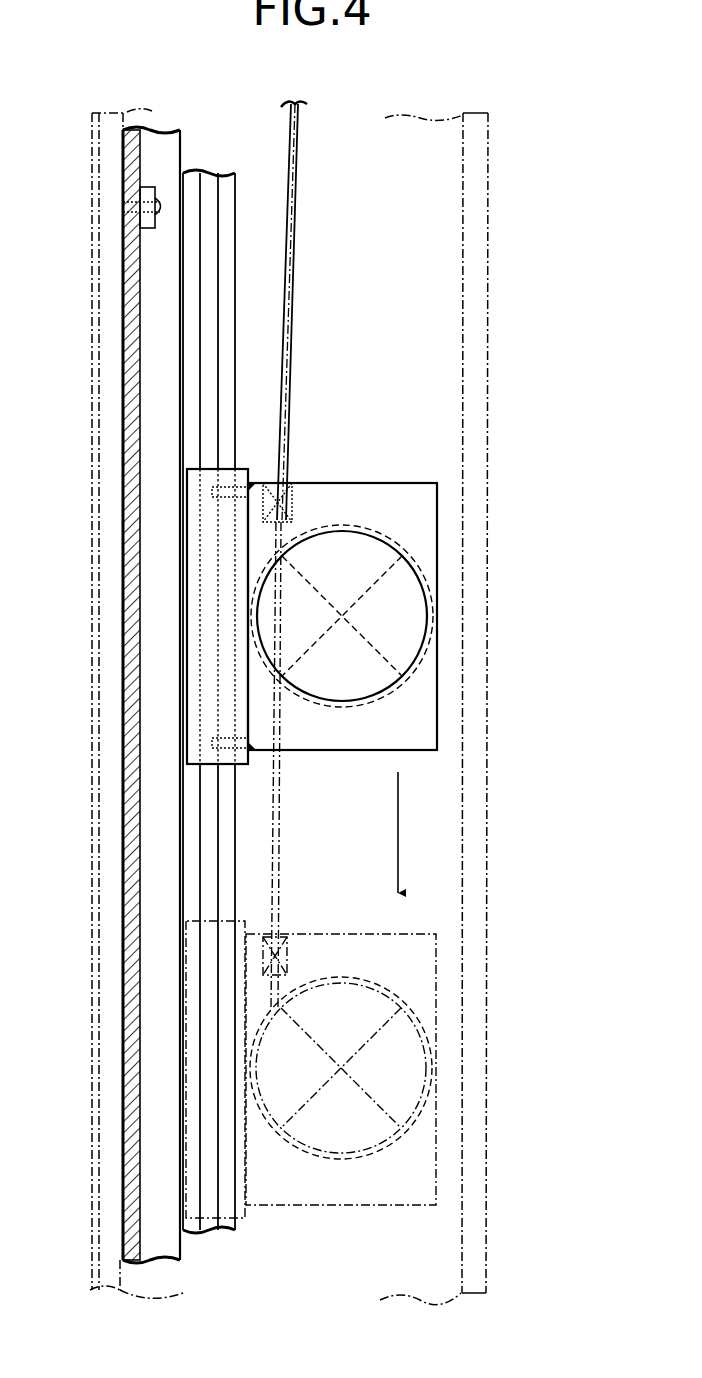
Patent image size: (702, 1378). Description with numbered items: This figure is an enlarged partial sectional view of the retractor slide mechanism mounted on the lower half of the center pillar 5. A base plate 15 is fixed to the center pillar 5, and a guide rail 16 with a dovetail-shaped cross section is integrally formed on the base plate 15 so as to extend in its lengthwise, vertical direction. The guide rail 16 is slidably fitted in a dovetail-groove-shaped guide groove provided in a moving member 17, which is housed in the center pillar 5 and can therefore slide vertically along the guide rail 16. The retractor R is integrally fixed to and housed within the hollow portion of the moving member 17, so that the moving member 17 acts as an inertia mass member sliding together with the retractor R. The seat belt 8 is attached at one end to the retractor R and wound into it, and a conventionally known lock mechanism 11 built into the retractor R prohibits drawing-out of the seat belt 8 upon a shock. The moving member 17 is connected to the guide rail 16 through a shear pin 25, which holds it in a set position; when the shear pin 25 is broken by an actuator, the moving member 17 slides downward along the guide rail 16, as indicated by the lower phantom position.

The base plate 15 is at (163, 152).
The guide rail 16 is at (227, 222).
The shear pin 25 is at (213, 492).
The moving member 17 is at (428, 520).
The retractor R is at (420, 667).
The lock mechanism 11 is at (293, 508).
The seat belt 8 is at (300, 295).
The center pillar 5 is at (482, 314).